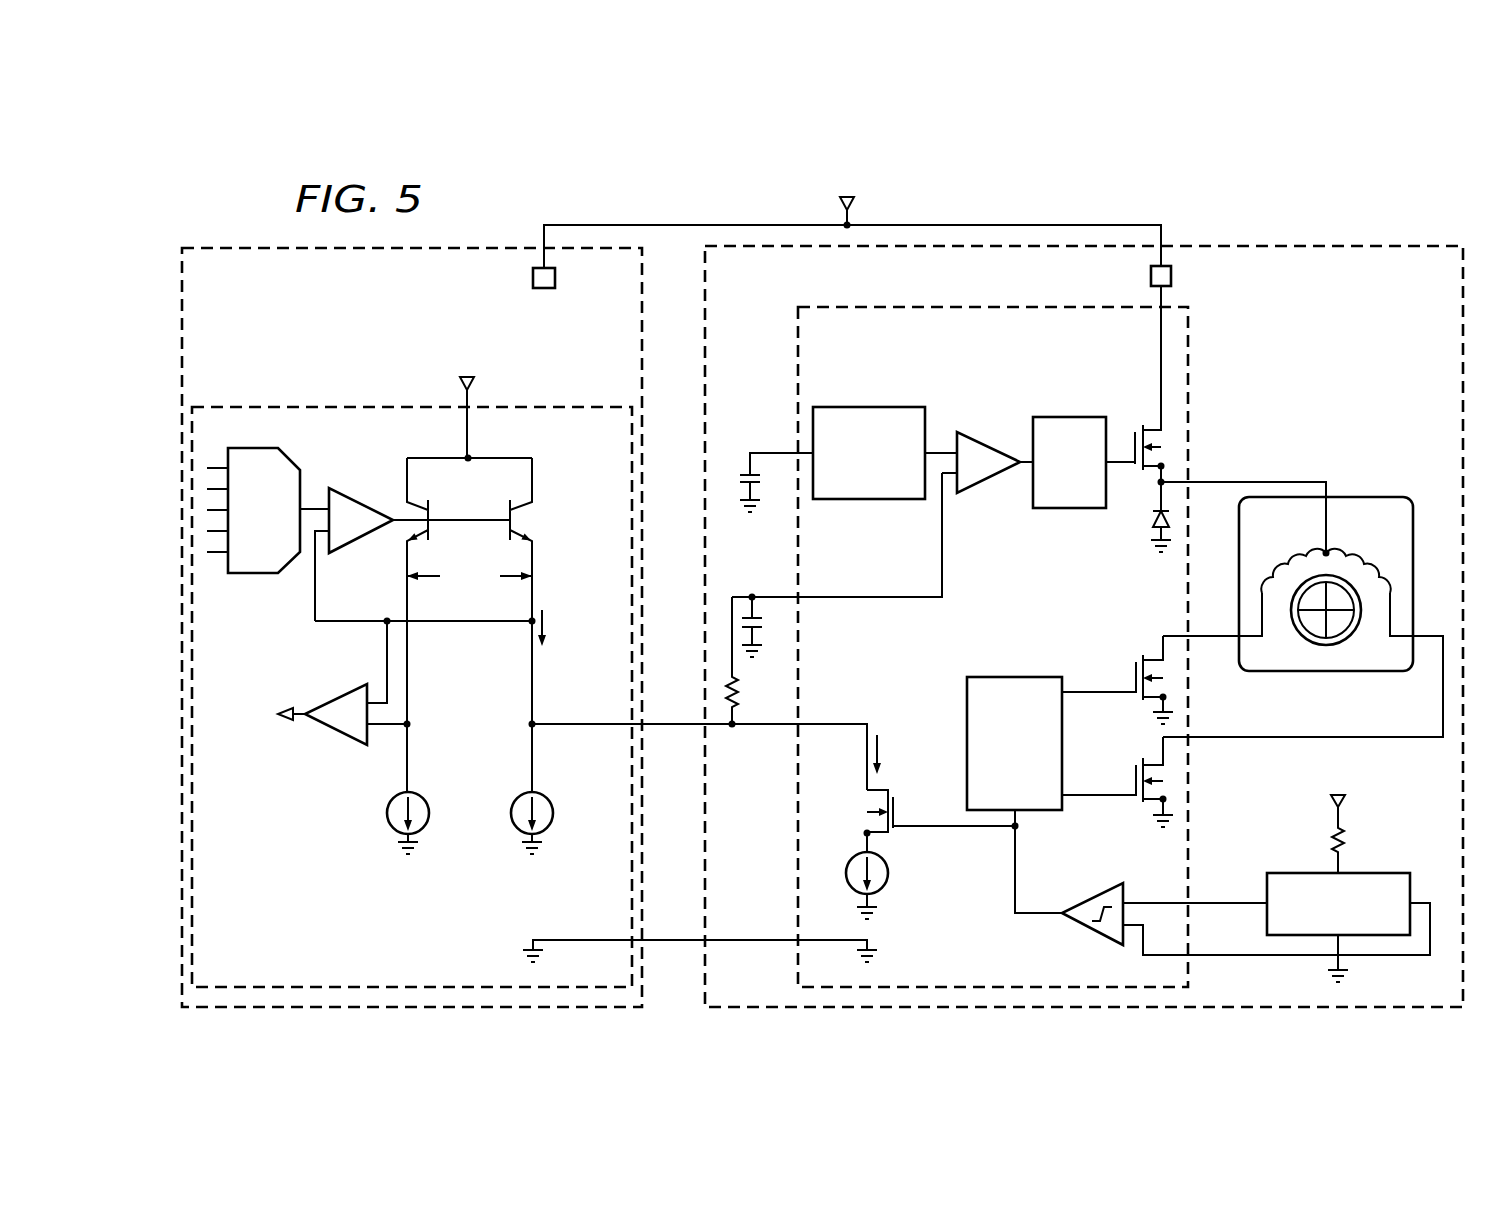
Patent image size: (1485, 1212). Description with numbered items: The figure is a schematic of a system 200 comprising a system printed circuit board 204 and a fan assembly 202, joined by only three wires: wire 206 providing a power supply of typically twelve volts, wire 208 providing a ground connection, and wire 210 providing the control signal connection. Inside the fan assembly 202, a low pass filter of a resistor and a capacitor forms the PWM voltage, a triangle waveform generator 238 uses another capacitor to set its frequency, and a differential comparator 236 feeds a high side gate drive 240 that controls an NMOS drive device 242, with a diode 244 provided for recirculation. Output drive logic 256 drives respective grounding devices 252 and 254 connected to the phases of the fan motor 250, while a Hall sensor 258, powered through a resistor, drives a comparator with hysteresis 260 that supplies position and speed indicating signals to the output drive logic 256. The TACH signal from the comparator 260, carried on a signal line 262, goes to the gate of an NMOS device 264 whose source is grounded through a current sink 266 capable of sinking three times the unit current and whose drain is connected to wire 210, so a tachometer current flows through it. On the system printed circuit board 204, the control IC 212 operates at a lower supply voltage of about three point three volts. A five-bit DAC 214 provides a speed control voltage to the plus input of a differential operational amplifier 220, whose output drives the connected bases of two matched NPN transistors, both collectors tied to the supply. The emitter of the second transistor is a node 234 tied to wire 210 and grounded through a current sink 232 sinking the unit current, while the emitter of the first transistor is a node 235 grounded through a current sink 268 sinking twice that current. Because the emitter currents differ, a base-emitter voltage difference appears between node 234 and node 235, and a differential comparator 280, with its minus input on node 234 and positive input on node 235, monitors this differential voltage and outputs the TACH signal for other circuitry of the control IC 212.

The system 200 is at (1340, 212).
The fan assembly 202 is at (1304, 389).
The system printed circuit board 204 is at (391, 336).
The wire providing a power supply 206 is at (1058, 224).
The wire providing a ground connection 208 is at (685, 942).
The wire providing the control signal connection 210 is at (685, 726).
The control IC 212 is at (309, 953).
The n-bit DAC 214 is at (263, 574).
The differential operational amplifier 220 is at (359, 503).
The current sink 232 is at (552, 818).
The node 234 is at (468, 623).
The node 235 is at (797, 349).
The differential comparator 236 is at (987, 480).
The triangle waveform generator 238 is at (868, 500).
The high side gate drive 240 is at (1072, 509).
The NMOS drive device 242 is at (1143, 426).
The diode 244 is at (1152, 518).
The fan motor 250 is at (1326, 672).
The grounding device 252 is at (1134, 666).
The grounding device 254 is at (1136, 766).
The output drive logic 256 is at (995, 794).
The Hall sensor 258 is at (1302, 873).
The comparator with hysteresis 260 is at (1094, 930).
The tachometer signal line 262 is at (1015, 890).
The NMOS device 264 is at (897, 801).
The current sink 266 is at (888, 870).
The current sink 268 is at (426, 830).
The differential comparator 280 is at (335, 735).